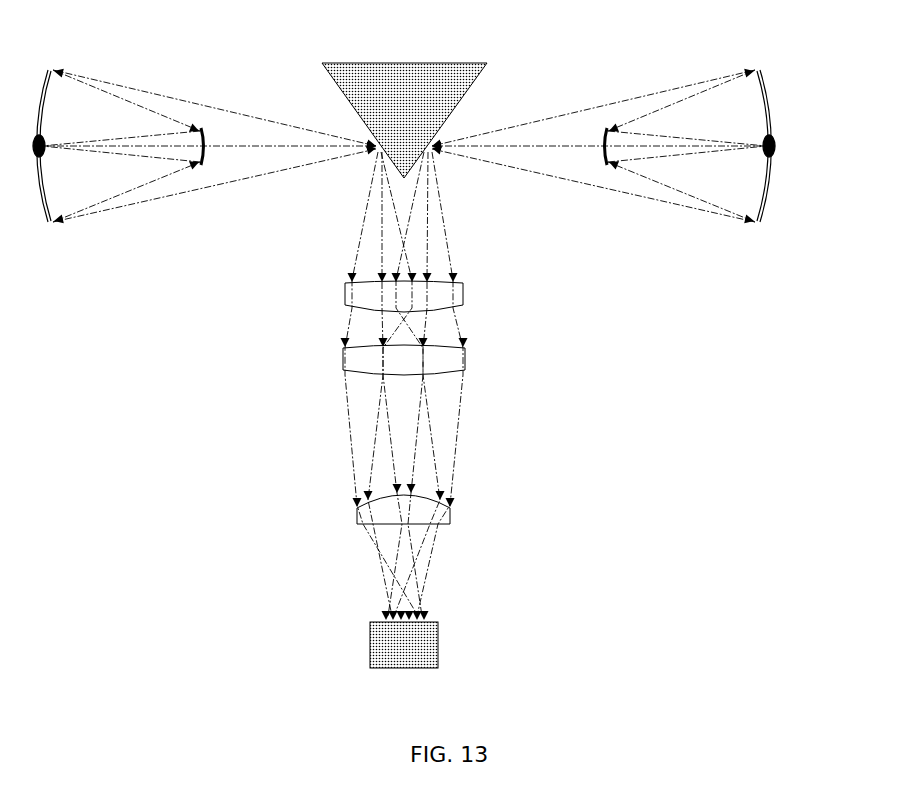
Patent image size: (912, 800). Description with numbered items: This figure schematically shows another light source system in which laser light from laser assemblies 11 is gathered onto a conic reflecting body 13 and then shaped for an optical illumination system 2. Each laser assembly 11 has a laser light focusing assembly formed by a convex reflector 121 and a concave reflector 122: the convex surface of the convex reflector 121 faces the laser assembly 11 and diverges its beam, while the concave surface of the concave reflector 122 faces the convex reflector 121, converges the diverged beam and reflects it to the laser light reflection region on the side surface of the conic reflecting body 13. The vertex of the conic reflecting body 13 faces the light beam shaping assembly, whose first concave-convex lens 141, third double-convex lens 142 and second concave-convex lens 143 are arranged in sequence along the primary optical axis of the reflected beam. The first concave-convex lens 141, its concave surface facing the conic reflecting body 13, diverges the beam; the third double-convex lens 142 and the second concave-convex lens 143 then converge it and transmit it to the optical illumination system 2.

The optical illumination system 2 is at (438, 637).
The laser assembly 11 is at (773, 150).
The conic reflecting body 13 is at (414, 63).
The convex reflector 121 is at (608, 158).
The concave reflector 122 is at (765, 205).
The first concave-convex lens 141 is at (463, 292).
The third double-convex lens 142 is at (465, 370).
The second concave-convex lens 143 is at (450, 515).